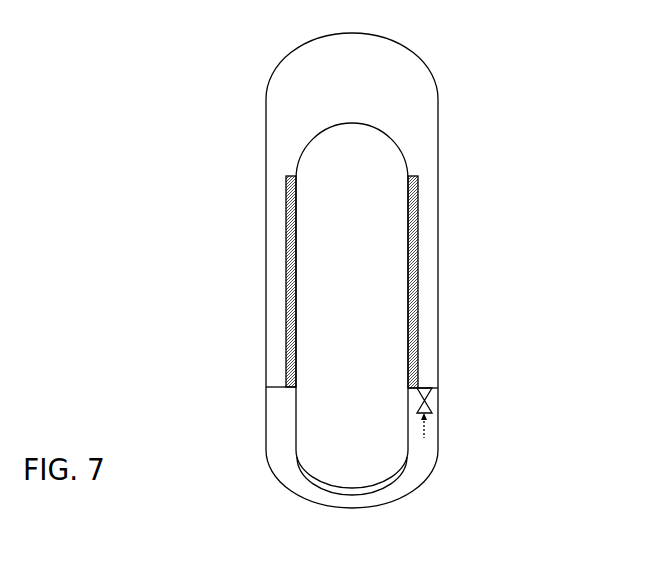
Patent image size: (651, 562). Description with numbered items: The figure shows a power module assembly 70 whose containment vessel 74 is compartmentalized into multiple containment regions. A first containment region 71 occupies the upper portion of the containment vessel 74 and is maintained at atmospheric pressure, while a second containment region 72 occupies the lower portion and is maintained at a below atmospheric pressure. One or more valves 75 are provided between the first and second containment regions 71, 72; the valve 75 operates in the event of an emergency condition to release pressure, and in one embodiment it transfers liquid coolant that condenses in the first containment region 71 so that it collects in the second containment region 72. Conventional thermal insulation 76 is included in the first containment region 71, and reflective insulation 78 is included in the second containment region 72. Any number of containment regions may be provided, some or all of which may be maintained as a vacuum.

The power module assembly 70 is at (458, 91).
The first containment region 71 is at (302, 80).
The second containment region 72 is at (277, 418).
The containment vessel 74 is at (262, 242).
The valve 75 is at (433, 408).
The conventional thermal insulation 76 is at (425, 258).
The reflective insulation 78 is at (393, 480).